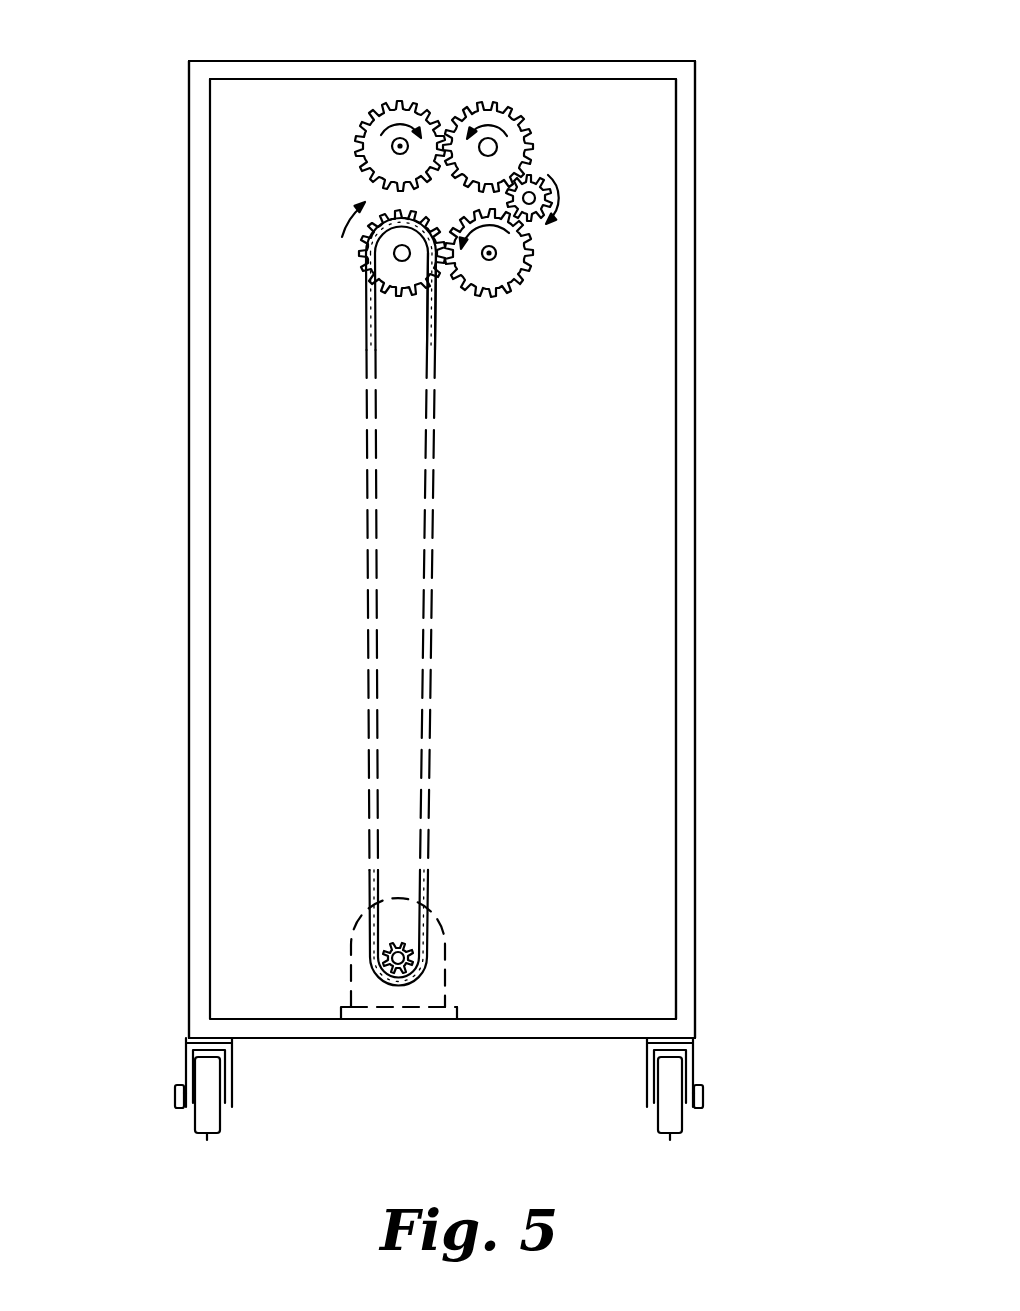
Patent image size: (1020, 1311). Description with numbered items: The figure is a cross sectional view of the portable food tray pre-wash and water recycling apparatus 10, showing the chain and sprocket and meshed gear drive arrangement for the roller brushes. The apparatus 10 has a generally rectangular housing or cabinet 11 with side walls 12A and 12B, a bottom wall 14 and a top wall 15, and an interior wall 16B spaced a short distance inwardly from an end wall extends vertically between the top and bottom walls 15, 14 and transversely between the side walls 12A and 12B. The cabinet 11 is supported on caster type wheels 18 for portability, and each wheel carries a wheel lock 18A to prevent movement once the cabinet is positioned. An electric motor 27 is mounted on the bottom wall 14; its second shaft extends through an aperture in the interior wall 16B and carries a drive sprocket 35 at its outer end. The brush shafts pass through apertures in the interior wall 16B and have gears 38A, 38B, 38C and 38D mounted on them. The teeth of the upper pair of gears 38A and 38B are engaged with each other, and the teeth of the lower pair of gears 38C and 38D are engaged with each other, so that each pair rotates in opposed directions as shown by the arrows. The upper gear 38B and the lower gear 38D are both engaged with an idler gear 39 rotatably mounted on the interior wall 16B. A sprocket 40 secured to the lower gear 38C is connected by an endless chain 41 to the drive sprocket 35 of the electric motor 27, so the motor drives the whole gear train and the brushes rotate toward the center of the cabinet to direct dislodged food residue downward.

The portable food tray pre-wash and water recycling apparatus 10 is at (768, 54).
The housing or cabinet 11 is at (178, 313).
The side wall 12A is at (187, 371).
The side wall 12B is at (697, 432).
The bottom wall 14 is at (500, 1039).
The top wall 15 is at (307, 62).
The interior wall 16B is at (586, 600).
The caster type wheels 18 is at (207, 1140).
The wheel lock 18A is at (175, 1093).
The electric motor 27 is at (447, 956).
The drive sprocket 35 is at (400, 940).
The gear 38A is at (356, 149).
The gear 38B is at (536, 136).
The gear 38C is at (360, 266).
The gear 38D is at (531, 286).
The idler gear 39 is at (557, 174).
The sprocket 40 is at (372, 275).
The endless chain 41 is at (437, 326).